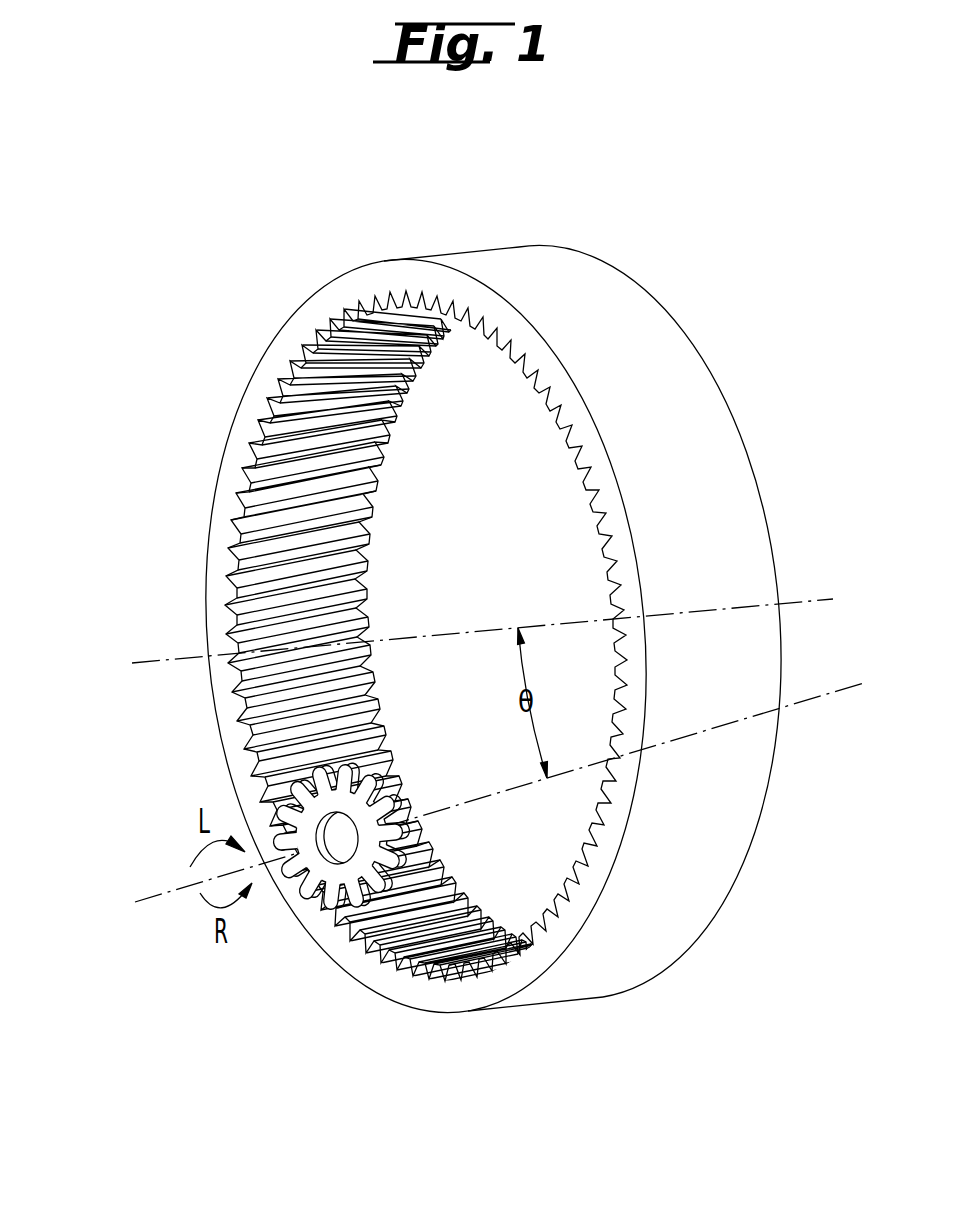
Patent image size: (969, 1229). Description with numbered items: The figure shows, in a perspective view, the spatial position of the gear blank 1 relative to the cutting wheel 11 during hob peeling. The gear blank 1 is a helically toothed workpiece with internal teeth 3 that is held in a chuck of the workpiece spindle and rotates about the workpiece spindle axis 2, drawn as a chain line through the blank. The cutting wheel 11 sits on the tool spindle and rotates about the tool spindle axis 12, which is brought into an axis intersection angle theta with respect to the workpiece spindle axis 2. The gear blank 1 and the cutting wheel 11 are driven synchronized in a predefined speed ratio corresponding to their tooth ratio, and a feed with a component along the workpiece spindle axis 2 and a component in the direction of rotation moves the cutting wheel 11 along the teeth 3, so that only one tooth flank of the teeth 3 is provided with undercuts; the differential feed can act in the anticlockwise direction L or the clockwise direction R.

The gear blank 1 is at (655, 373).
The workpiece spindle axis 2 is at (177, 658).
The teeth 3 is at (365, 307).
The cutting wheel 11 is at (337, 884).
The tool spindle axis 12 is at (180, 887).